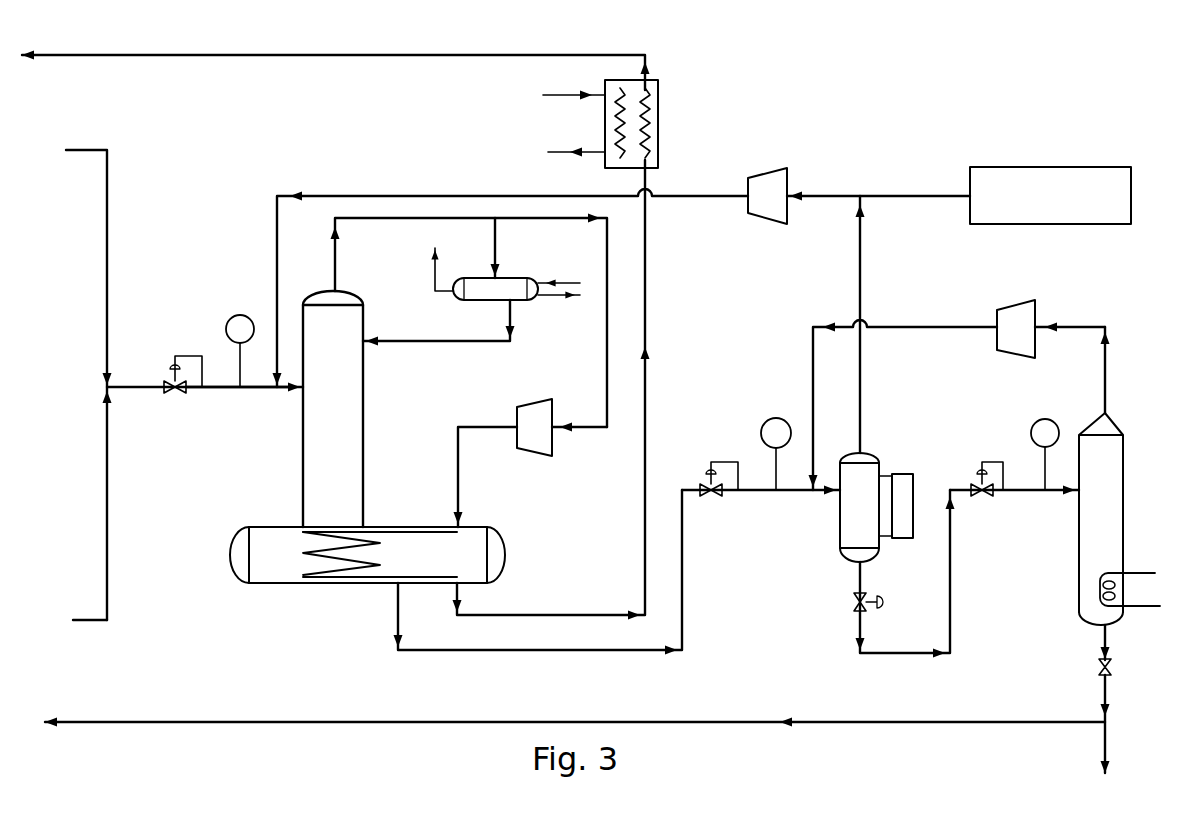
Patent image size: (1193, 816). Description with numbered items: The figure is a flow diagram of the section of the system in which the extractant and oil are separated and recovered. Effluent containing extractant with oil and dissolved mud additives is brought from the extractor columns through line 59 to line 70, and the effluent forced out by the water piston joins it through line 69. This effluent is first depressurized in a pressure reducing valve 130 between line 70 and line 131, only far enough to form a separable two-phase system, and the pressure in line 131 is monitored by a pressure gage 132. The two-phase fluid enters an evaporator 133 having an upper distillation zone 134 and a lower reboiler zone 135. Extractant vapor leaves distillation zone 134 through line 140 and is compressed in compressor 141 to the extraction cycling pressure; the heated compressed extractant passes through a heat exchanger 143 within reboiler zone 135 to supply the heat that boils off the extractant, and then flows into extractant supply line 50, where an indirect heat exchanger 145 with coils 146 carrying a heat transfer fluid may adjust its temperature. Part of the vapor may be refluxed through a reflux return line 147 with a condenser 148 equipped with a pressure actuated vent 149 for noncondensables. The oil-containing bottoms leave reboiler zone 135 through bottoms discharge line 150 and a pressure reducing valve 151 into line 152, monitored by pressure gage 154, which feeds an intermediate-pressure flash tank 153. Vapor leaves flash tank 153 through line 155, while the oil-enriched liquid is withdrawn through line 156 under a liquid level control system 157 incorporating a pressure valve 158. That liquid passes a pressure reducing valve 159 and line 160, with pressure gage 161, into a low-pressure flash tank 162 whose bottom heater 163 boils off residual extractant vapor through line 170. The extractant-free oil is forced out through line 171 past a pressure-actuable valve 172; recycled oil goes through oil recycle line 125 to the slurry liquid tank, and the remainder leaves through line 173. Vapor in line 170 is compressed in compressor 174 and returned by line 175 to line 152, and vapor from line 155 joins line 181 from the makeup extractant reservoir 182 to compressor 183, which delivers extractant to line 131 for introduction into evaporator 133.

The extractant supply line 50 is at (400, 54).
The line 59 is at (85, 622).
The line 69 is at (107, 147).
The line 70 is at (137, 383).
The oil recycle line 125 is at (672, 720).
The pressure reducing valve 130 is at (172, 398).
The line 131 is at (218, 390).
The pressure gage 132 is at (232, 316).
The evaporator 133 is at (366, 432).
The distillation zone 134 is at (345, 330).
The reboiler zone 135 is at (272, 527).
The line 140 is at (355, 220).
The compressor 141 is at (537, 410).
The heat exchanger 143 is at (327, 580).
The indirect heat exchanger 145 is at (620, 118).
The coils 146 is at (565, 92).
The reflux return line 147 is at (497, 240).
The condenser 148 is at (520, 297).
The pressure actuated vent 149 is at (432, 272).
The bottoms discharge line 150 is at (520, 655).
The pressure reducing valve 151 is at (708, 500).
The line 152 is at (800, 495).
The intermediate-pressure flash tank 153 is at (870, 475).
The pressure gage 154 is at (763, 425).
The line 155 is at (863, 272).
The line 156 is at (853, 630).
The liquid level control system 157 is at (905, 480).
The pressure valve 158 is at (853, 600).
The pressure reducing valve 159 is at (980, 500).
The line 160 is at (1027, 495).
The pressure gage 161 is at (1032, 427).
The low-pressure flash tank 162 is at (1110, 525).
The bottom heater 163 is at (1140, 572).
The line 170 is at (1107, 378).
The line 171 is at (1108, 643).
The pressure-actuable valve 172 is at (1112, 668).
The line 173 is at (1108, 730).
The compressor 174 is at (1027, 318).
The line 175 is at (937, 330).
The line 181 is at (833, 194).
The makeup extractant reservoir 182 is at (985, 177).
The compressor 183 is at (770, 178).